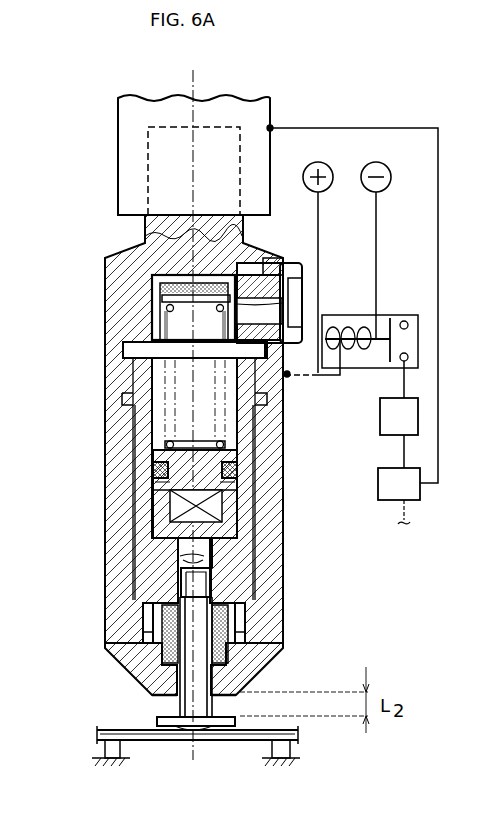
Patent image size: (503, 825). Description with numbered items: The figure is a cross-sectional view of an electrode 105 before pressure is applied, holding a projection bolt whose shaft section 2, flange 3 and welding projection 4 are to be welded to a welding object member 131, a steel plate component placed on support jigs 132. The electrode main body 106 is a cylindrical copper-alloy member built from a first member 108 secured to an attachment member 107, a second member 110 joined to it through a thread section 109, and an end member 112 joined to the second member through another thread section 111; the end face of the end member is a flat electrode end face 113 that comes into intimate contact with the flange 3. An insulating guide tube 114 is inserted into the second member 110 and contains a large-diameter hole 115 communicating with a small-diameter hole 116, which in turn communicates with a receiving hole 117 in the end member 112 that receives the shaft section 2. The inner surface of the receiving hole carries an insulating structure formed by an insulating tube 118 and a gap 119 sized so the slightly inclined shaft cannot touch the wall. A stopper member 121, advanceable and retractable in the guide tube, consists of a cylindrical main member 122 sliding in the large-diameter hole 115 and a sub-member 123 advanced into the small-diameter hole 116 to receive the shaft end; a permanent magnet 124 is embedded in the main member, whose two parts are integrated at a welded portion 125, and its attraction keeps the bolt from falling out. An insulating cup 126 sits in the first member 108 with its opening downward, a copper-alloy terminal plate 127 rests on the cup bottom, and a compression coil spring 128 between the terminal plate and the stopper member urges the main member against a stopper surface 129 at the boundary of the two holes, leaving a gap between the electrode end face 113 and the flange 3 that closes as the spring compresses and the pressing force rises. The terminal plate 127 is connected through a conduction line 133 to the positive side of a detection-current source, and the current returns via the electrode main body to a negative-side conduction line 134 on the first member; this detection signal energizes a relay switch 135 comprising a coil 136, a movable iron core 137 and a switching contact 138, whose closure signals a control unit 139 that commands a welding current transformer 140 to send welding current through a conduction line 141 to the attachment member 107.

The shaft section 2 is at (214, 632).
The flange 3 is at (148, 741).
The welding projection 4 is at (185, 729).
The electrode 105 is at (90, 270).
The electrode main body 106 is at (98, 455).
The attachment member 107 is at (118, 172).
The first member 108 is at (113, 333).
The thread section 109 is at (123, 352).
The second member 110 is at (133, 428).
The thread section 111 is at (143, 620).
The end member 112 is at (113, 668).
The electrode end face 113 is at (152, 700).
The guide tube 114 is at (153, 518).
The large-diameter hole 115 is at (153, 470).
The small-diameter hole 116 is at (152, 566).
The receiving hole 117 is at (224, 655).
The insulating tube 118 is at (257, 610).
The gap 119 is at (245, 729).
The stopper member 121 is at (237, 455).
The main member 122 is at (185, 446).
The sub-member 123 is at (213, 557).
The permanent magnet 124 is at (218, 506).
The welded portion 125 is at (240, 482).
The insulating cup 126 is at (152, 282).
The terminal plate 127 is at (154, 272).
The compression coil spring 128 is at (280, 407).
The stopper surface 129 is at (225, 531).
The welding object member 131 is at (100, 735).
The support jigs 132 is at (105, 752).
The conduction line 133 is at (320, 227).
The negative-side conduction line 134 is at (322, 377).
The relay switch 135 is at (414, 316).
The coil 136 is at (348, 327).
The movable iron core 137 is at (389, 315).
The switching contact 138 is at (410, 341).
The control unit 139 is at (399, 414).
The welding current transformer 140 is at (399, 496).
The conduction line 141 is at (440, 210).